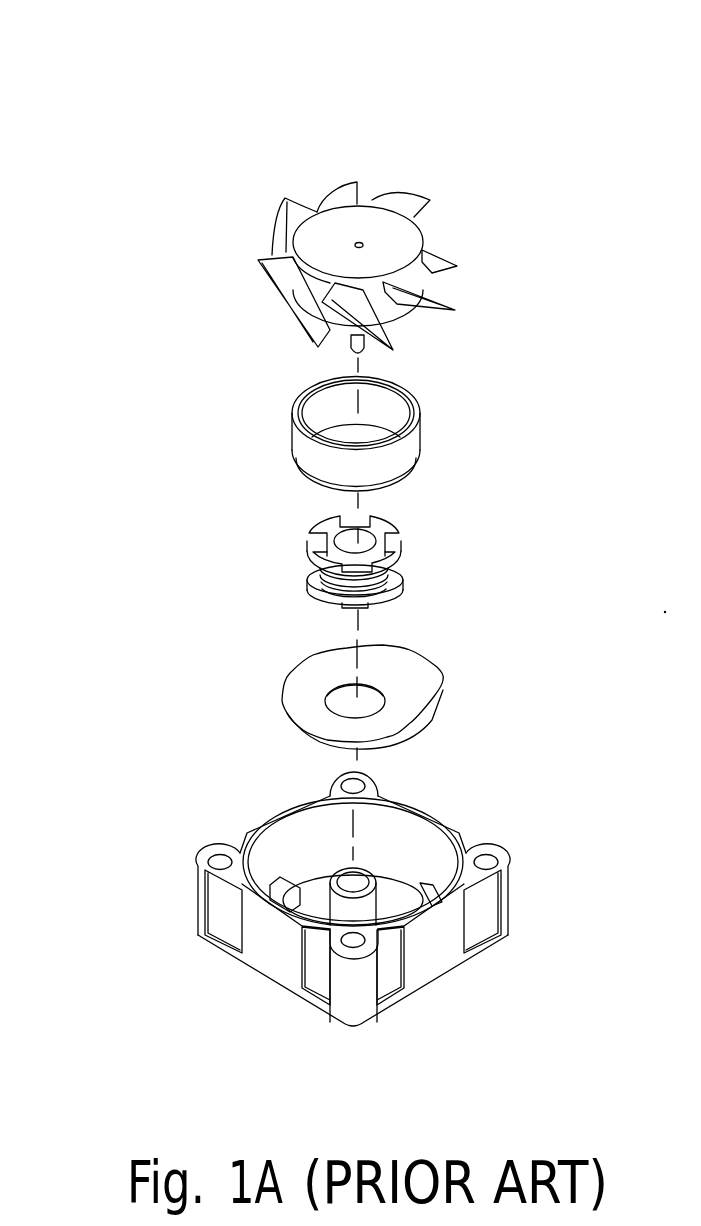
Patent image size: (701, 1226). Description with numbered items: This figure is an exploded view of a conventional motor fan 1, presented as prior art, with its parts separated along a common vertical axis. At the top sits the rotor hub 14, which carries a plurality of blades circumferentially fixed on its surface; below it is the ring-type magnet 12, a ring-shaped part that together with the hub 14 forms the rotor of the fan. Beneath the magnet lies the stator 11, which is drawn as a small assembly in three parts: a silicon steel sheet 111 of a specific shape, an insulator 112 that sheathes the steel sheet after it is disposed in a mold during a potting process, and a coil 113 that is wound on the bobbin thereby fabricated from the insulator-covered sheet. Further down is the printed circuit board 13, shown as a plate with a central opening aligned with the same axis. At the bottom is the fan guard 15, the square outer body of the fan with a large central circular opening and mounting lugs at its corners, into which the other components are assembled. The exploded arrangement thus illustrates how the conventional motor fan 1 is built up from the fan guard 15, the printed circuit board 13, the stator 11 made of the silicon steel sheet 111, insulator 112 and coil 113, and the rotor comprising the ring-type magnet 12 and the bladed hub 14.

The motor fan 1 is at (504, 136).
The stator 11 is at (300, 578).
The silicon steel sheet 111 is at (383, 524).
The insulator 112 is at (398, 546).
The coil 113 is at (390, 590).
The ring-type magnet 12 is at (285, 446).
The printed circuit board 13 is at (280, 722).
The hub 14 is at (270, 297).
The fan guard 15 is at (193, 923).